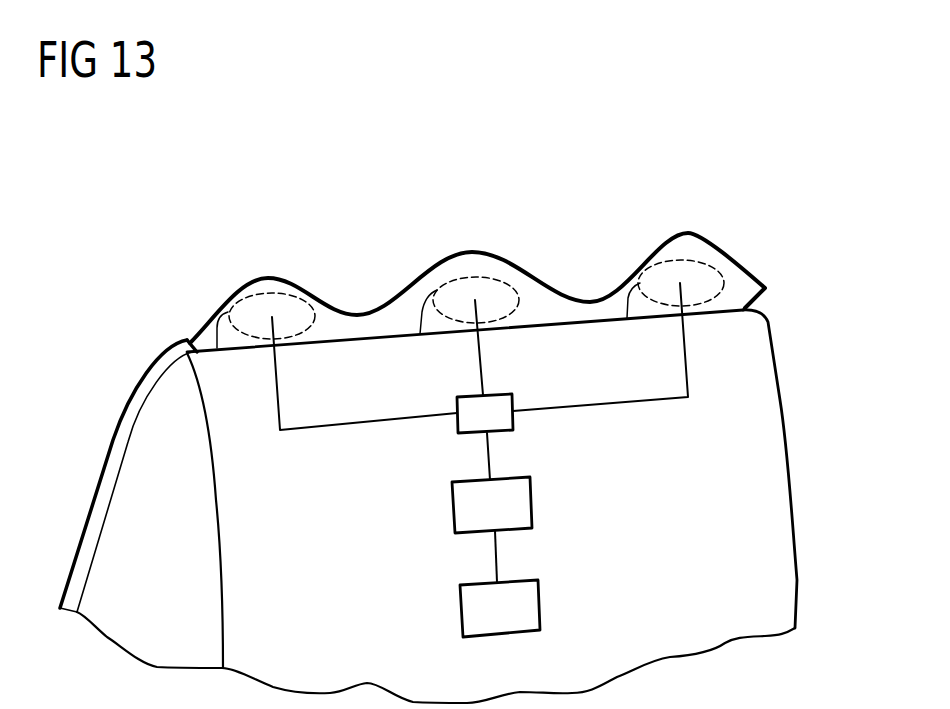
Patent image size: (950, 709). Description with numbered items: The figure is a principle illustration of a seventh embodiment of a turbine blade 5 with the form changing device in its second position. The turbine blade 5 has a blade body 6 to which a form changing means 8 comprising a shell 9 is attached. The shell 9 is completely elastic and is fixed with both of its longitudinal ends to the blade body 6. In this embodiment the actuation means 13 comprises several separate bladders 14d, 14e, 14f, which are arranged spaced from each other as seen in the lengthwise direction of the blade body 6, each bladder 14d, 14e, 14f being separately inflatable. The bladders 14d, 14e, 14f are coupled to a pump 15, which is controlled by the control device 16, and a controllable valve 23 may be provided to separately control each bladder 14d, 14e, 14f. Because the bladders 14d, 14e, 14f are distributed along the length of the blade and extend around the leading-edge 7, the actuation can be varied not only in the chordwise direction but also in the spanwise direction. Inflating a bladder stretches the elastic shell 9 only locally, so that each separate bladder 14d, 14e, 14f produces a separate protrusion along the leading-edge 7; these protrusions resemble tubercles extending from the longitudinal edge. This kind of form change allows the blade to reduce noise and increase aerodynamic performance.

The turbine blade 5 is at (150, 287).
The blade body 6 is at (778, 497).
The leading-edge 7 is at (718, 315).
The form changing means 8 is at (307, 214).
The shell 9 is at (412, 280).
The actuation means 13 is at (408, 450).
The bladder 14d is at (252, 313).
The bladder 14e is at (457, 297).
The bladder 14f is at (663, 282).
The pump 15 is at (532, 497).
The control device 16 is at (540, 603).
The controllable valve 23 is at (513, 420).